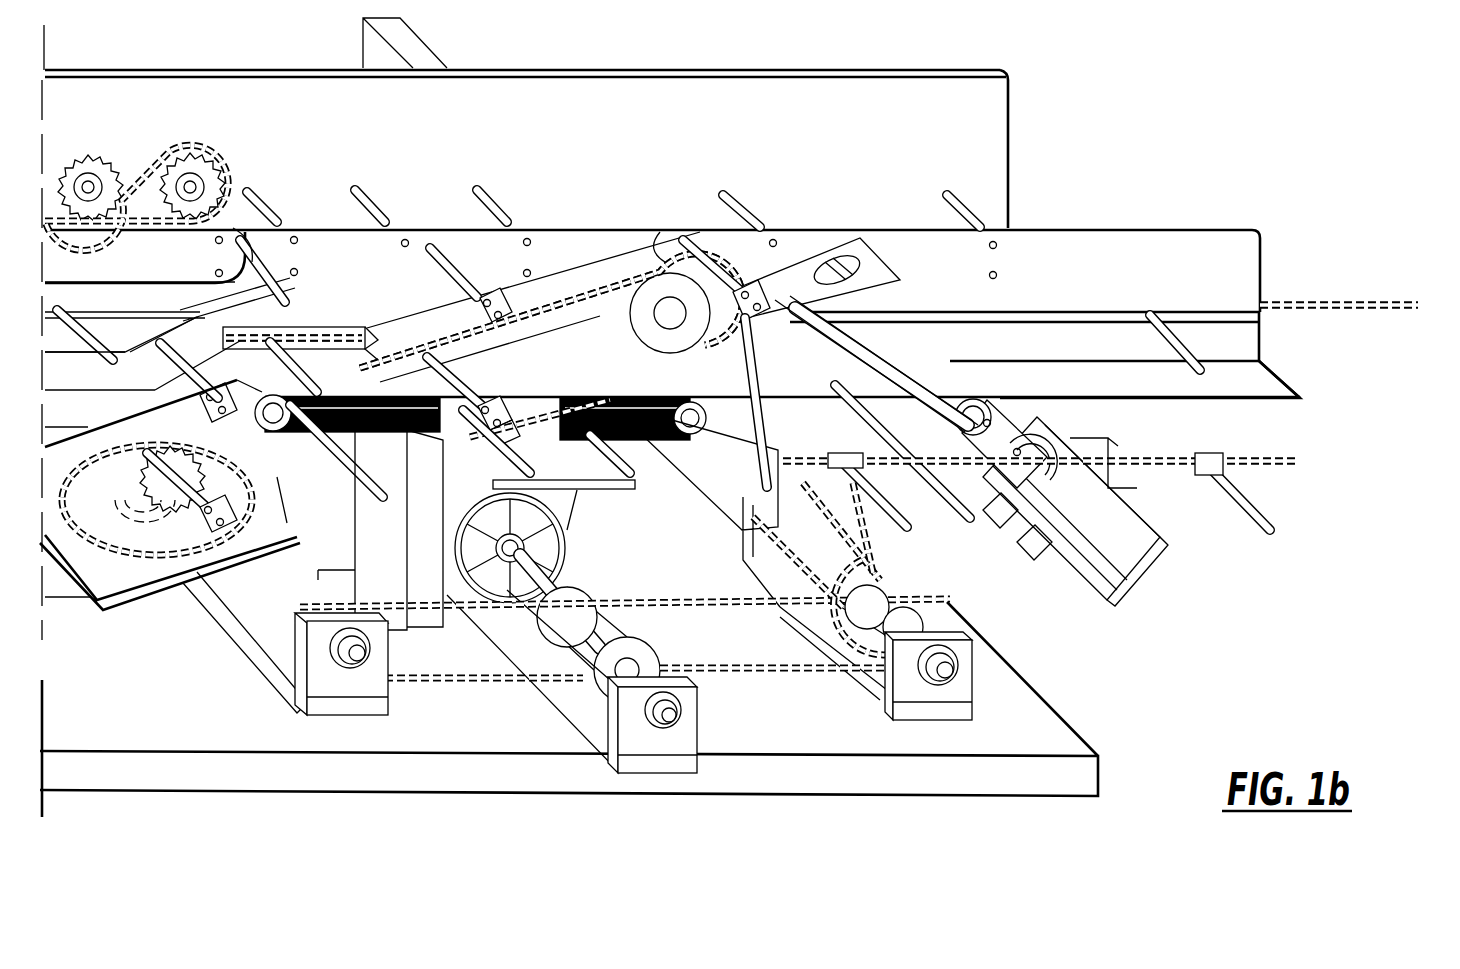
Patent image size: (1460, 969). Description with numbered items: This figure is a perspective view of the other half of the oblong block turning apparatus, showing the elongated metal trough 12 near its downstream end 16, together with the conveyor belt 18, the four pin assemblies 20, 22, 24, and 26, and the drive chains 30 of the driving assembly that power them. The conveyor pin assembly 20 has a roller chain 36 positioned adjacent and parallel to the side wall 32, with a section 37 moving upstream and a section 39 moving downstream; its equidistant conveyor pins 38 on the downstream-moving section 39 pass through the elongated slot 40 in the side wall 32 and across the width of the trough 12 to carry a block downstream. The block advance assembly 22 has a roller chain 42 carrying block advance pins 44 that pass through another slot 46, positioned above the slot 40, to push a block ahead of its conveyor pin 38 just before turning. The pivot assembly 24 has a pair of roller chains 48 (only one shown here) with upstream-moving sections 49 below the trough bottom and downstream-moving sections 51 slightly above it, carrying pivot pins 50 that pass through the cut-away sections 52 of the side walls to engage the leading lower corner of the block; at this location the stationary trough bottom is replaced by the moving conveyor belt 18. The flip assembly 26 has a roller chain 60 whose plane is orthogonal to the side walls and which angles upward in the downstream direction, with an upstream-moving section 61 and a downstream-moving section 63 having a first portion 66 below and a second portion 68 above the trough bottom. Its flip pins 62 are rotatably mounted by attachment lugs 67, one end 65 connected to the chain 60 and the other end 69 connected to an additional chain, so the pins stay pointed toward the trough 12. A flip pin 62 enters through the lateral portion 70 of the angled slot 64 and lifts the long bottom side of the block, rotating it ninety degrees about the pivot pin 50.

The elongated trough 12 is at (1298, 388).
The downstream end 16 is at (1280, 375).
The conveyor belt 18 is at (636, 391).
The pin assembly 20 is at (1243, 452).
The pin assembly 22 is at (232, 160).
The pin assembly 24 is at (303, 330).
The pin assembly 26 is at (191, 553).
The drive chains 30 is at (893, 563).
The side wall 32 is at (1235, 279).
The roller chain 36 is at (1362, 300).
The section 37 is at (1077, 492).
The conveyor pins 38 is at (1195, 355).
The section 39 is at (1344, 263).
The elongated slot 40 is at (1088, 313).
The roller chain 42 is at (158, 160).
The block advance pins 44 is at (280, 298).
The elongated slot 46 is at (152, 283).
The roller chains 48 is at (345, 330).
The upstream-moving sections 49 is at (405, 432).
The pivot pins 50 is at (307, 365).
The downstream-moving sections 51 is at (345, 330).
The cut-away sections 52 is at (232, 352).
The roller chain 60 is at (108, 455).
The upstream-moving section 61 is at (548, 392).
The flip pins 62 is at (660, 238).
The downstream-moving section 63 is at (433, 335).
The angled slot 64 is at (395, 262).
The end 65 is at (510, 420).
The first portion 66 is at (112, 445).
The flip pin attachment lug 67 is at (503, 400).
The second portion 68 is at (550, 300).
The end 69 is at (483, 408).
The lateral portion 70 is at (140, 373).